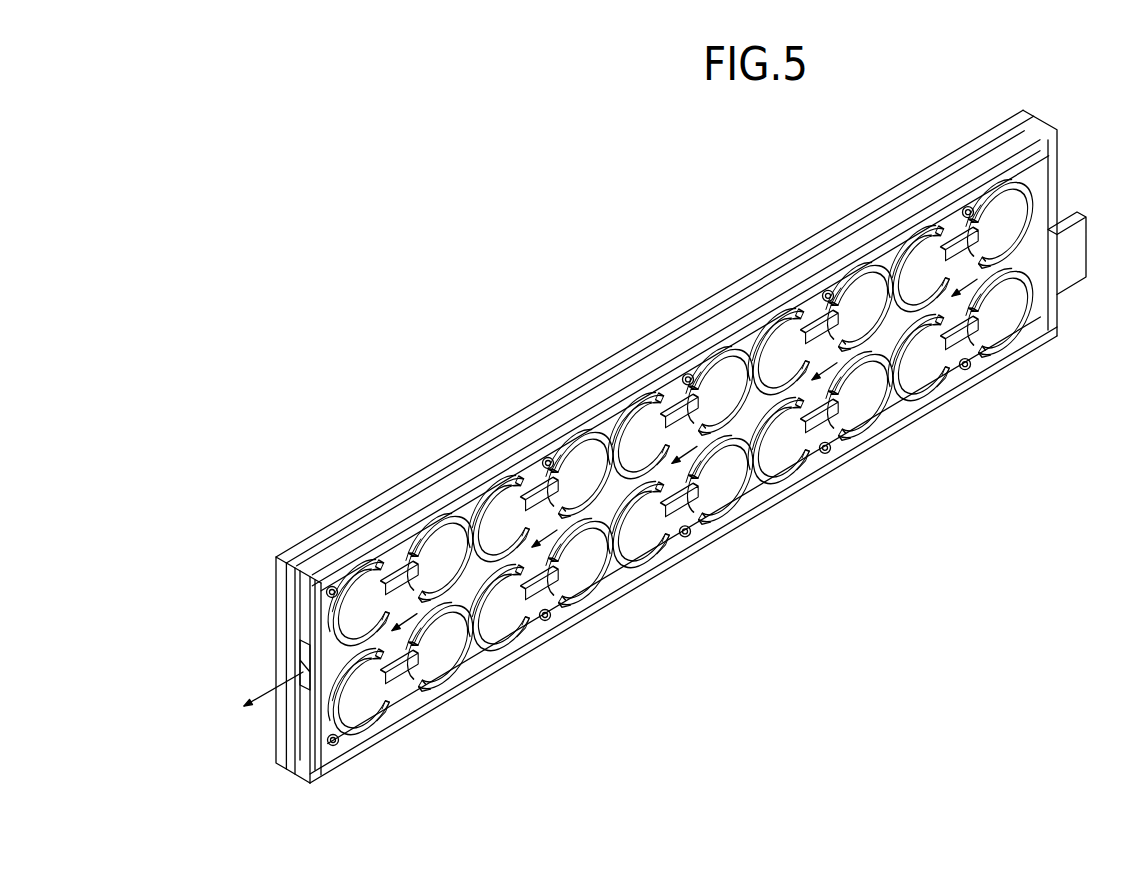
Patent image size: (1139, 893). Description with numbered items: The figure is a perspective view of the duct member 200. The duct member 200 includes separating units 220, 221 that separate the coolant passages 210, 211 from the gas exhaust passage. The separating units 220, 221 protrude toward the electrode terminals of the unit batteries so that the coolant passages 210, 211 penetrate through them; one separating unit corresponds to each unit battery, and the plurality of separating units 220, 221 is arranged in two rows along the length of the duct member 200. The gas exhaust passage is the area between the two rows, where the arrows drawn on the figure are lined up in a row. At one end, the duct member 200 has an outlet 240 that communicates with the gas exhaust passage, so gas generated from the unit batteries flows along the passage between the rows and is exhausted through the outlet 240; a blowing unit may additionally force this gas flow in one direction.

The duct member 200 is at (598, 275).
The coolant passage 210 is at (563, 619).
The coolant passage 211 is at (493, 645).
The separating unit 220 is at (567, 582).
The separating unit 221 is at (508, 617).
The outlet 240 is at (305, 654).